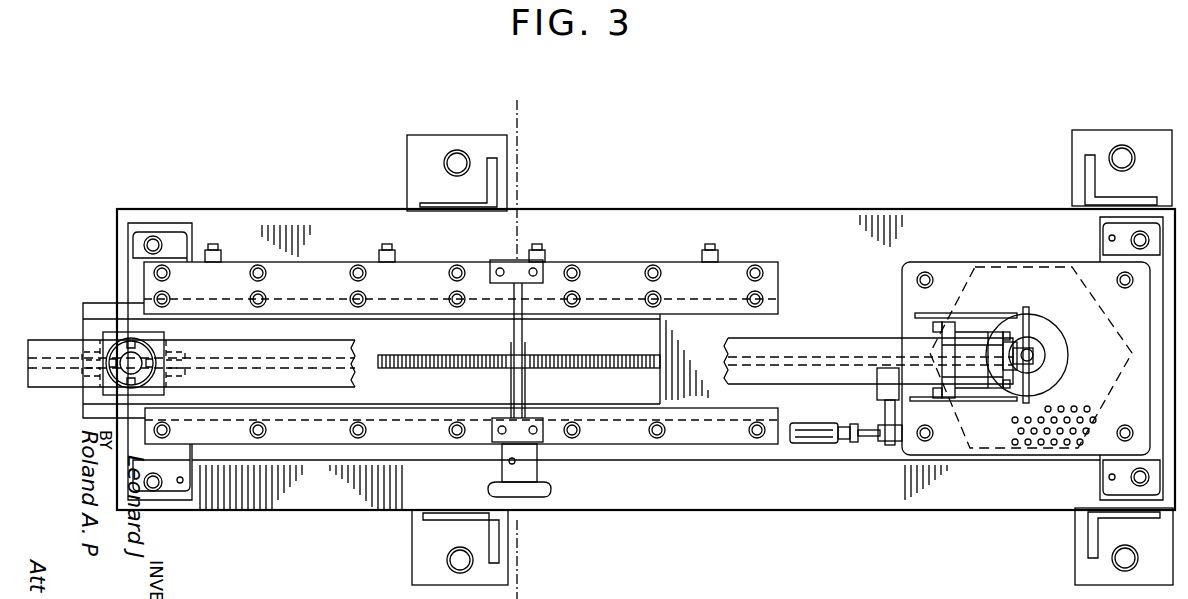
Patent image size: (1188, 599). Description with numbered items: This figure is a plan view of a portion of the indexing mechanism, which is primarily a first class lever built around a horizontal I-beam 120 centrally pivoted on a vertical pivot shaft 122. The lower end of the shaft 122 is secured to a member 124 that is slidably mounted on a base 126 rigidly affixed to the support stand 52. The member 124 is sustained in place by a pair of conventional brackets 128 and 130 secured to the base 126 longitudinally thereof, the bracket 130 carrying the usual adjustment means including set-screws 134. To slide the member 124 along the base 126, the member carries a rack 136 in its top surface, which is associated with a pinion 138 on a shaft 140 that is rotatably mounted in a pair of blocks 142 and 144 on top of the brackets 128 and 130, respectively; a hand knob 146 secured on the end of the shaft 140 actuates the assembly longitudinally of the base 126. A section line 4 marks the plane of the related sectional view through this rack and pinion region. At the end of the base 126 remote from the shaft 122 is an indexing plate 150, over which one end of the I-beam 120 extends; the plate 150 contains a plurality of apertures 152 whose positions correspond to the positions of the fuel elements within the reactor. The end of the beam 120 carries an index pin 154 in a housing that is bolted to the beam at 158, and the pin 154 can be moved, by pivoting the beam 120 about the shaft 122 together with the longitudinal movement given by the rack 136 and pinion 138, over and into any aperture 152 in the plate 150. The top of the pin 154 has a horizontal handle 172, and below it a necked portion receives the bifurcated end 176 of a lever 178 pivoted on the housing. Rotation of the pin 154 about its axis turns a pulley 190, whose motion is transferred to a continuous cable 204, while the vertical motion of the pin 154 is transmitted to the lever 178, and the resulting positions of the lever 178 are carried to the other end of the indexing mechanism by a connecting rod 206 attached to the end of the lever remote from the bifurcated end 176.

The section line 4- 4 is at (492, 110).
The support stand 52 is at (812, 500).
The horizontal I-beam 120 is at (830, 312).
The vertical pivot shaft 122 is at (131, 360).
The member 124 is at (320, 290).
The base 126 is at (840, 250).
The bracket 128 is at (690, 430).
The bracket 130 is at (607, 272).
The set-screws 134 is at (745, 233).
The rack 136 is at (645, 352).
The pinion 138 is at (548, 355).
The shaft 140 is at (527, 385).
The block 142 is at (542, 437).
The block 144 is at (520, 272).
The hand knob 146 is at (548, 490).
The indexing plate 150 is at (963, 452).
The apertures 152 is at (1062, 410).
The index pin 154 is at (1040, 350).
The bolts 158 is at (975, 415).
The horizontal handle 172 is at (1035, 320).
The bifurcated end 176 is at (1035, 365).
The lever 178 is at (920, 345).
The pulley 190 is at (1034, 355).
The continuous cable 204 is at (1010, 322).
The connecting rod 206 is at (826, 445).